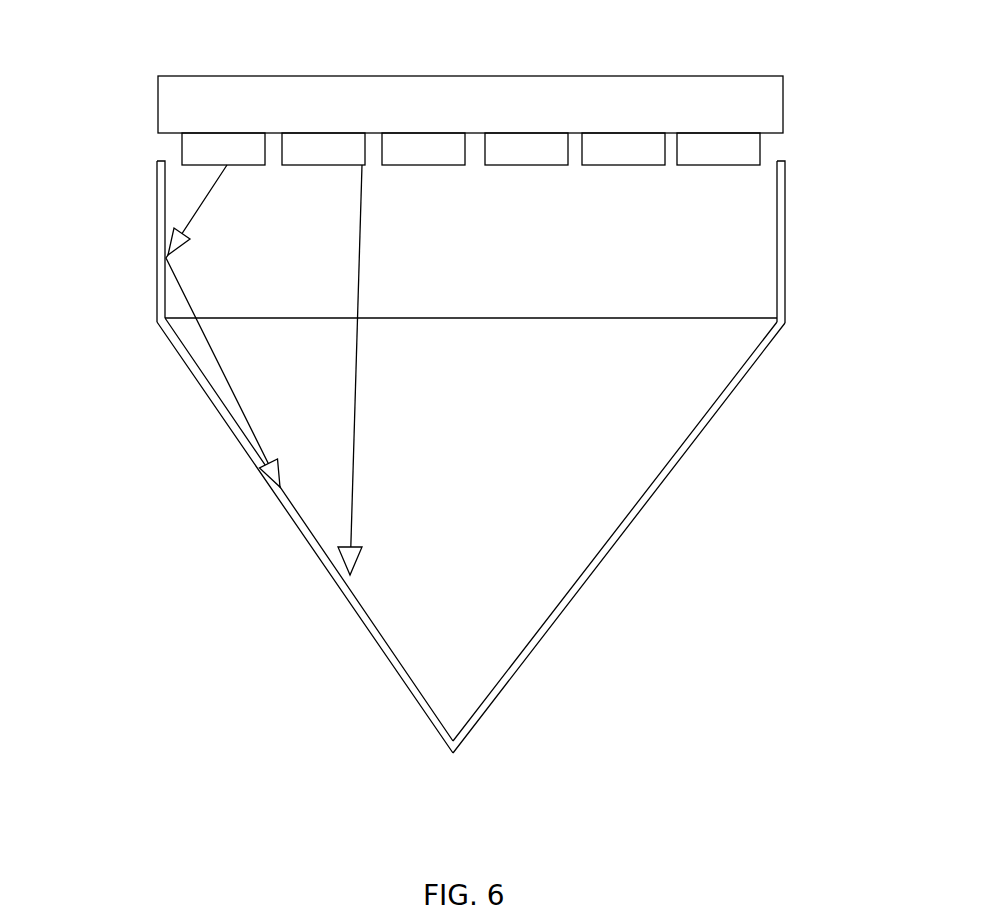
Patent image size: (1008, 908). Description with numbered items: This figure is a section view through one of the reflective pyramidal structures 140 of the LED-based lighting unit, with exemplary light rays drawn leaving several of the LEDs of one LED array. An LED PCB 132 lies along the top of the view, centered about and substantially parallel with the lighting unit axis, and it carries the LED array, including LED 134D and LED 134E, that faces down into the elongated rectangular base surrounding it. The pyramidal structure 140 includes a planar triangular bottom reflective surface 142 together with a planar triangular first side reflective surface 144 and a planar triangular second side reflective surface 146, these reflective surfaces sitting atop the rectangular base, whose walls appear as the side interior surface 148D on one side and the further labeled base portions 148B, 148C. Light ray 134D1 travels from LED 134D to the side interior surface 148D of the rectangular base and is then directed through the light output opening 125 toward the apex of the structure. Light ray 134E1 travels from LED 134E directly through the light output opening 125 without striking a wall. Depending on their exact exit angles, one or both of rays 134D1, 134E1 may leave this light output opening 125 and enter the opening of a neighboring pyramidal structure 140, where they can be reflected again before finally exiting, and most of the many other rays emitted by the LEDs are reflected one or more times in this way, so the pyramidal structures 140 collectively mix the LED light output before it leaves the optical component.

The light output opening 125 is at (466, 457).
The LED PCB 132 is at (693, 110).
The LED 134D is at (205, 150).
The LED 134E is at (327, 150).
The light ray 134D1 is at (206, 345).
The light ray 134E1 is at (352, 458).
The reflective pyramidal structure 140 is at (461, 376).
The bottom reflective surface 142 is at (484, 408).
The first side reflective surface 144 is at (614, 498).
The second side reflective surface 146 is at (398, 632).
The upper cavity region 148B is at (493, 243).
The right side wall 148C is at (757, 212).
The side interior surface of rectangular base 148D is at (186, 197).